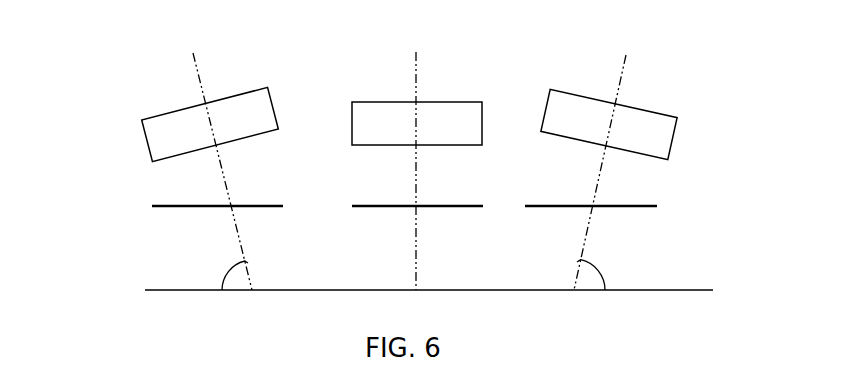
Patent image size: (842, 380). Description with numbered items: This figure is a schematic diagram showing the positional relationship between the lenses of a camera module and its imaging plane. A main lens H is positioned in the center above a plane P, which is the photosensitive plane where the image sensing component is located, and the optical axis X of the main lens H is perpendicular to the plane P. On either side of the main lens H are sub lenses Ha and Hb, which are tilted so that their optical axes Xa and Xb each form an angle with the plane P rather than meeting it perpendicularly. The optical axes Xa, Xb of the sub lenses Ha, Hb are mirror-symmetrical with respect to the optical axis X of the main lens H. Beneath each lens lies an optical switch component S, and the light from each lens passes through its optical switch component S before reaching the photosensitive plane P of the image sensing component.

The optical axis of sub lens Ha Xa is at (215, 153).
The optical axis of main lens X is at (415, 153).
The optical axis of sub lens Hb Xb is at (605, 154).
The sub lens Ha is at (143, 113).
The main lens H is at (380, 94).
The sub lens Hb is at (672, 115).
The optical switch component S is at (153, 204).
The plane (photosensitive plane) P is at (173, 290).